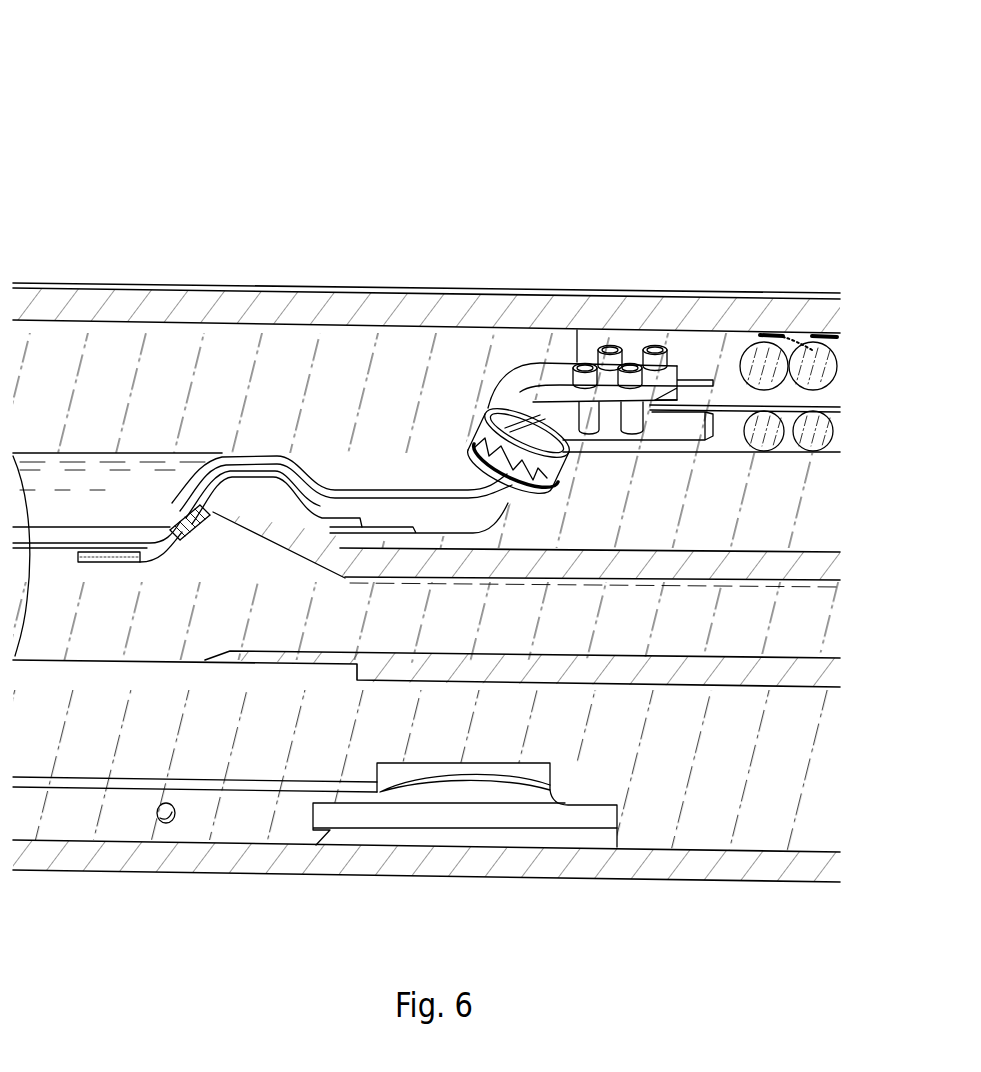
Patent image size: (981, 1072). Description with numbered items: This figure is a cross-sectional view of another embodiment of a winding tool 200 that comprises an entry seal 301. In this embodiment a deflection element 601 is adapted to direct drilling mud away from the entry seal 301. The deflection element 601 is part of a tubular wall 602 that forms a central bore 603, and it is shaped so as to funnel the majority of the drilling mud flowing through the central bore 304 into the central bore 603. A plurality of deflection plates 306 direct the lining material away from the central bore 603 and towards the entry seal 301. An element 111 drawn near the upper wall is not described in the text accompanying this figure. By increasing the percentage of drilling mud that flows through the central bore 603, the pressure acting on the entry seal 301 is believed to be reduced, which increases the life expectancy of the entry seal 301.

The apparatus 200 is at (148, 92).
The entry seal 301 is at (455, 405).
The central bore 304 is at (42, 624).
The deflection plates 306 is at (148, 550).
The roller bearing assembly 111 is at (697, 397).
The deflection element 601 is at (222, 507).
The tubular wall 602 is at (505, 563).
The central bore 603 is at (548, 630).